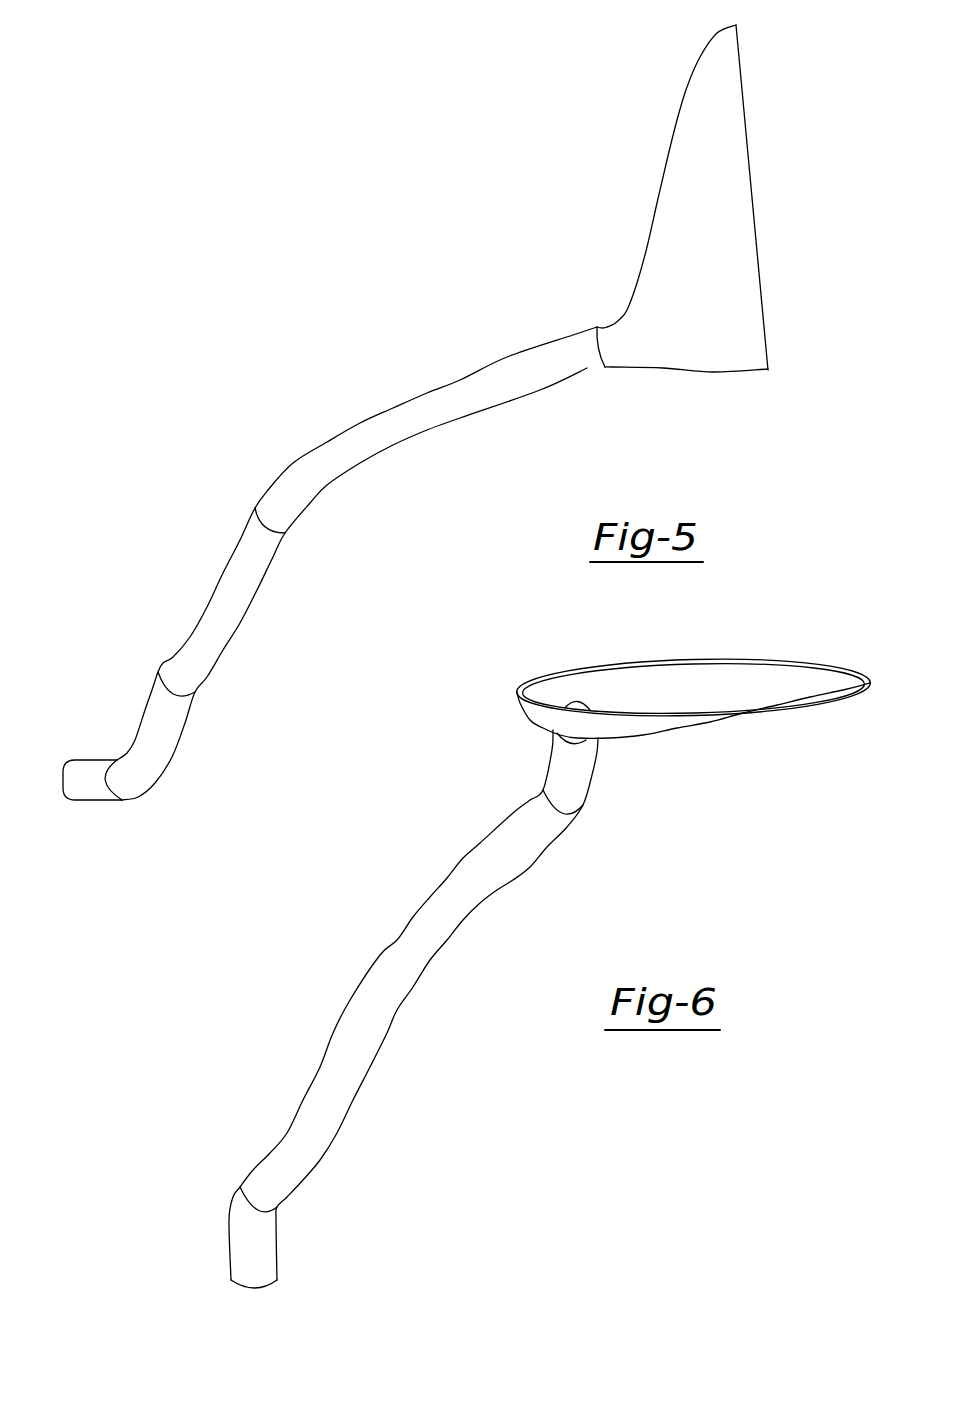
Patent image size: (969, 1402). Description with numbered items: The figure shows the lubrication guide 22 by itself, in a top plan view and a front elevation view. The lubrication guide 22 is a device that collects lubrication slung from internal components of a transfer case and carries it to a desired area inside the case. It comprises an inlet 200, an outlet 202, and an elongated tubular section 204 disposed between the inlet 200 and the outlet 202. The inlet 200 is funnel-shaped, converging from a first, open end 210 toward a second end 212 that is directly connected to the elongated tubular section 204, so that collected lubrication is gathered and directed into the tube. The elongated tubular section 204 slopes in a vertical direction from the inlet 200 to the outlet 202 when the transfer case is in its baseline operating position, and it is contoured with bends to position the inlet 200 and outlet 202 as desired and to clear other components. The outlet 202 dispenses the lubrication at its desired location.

In FIG. 5, the lubrication guide 22 is at (368, 313).
In FIG. 6, the lubrication guide 22 is at (347, 838).
In FIG. 5, the inlet 200 is at (716, 351).
In FIG. 6, the inlet 200 is at (712, 718).
In FIG. 5, the outlet 202 is at (98, 772).
In FIG. 6, the outlet 202 is at (250, 1253).
In FIG. 5, the elongated tubular section 204 is at (325, 468).
In FIG. 6, the elongated tubular section 204 is at (383, 965).
In FIG. 5, the first, open end 210 is at (752, 182).
In FIG. 6, the first, open end 210 is at (757, 658).
In FIG. 5, the second end 212 is at (613, 337).
In FIG. 6, the second end 212 is at (582, 748).